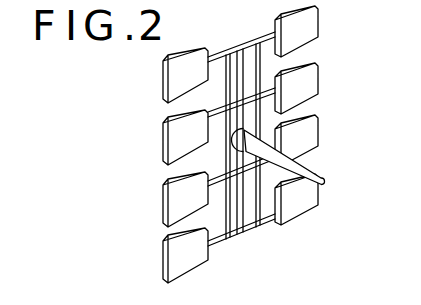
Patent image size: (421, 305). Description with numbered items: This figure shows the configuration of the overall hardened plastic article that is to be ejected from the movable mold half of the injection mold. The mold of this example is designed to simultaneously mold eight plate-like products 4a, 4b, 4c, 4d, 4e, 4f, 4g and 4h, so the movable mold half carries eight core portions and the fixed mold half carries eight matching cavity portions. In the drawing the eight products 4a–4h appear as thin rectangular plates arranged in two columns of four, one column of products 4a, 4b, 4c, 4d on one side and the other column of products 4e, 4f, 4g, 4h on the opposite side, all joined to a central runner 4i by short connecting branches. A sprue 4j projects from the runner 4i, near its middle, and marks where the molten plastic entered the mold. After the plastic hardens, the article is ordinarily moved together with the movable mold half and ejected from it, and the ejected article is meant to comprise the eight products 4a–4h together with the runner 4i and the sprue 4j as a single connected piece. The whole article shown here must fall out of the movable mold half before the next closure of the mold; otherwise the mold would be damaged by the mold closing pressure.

The product 4a is at (178, 78).
The product 4b is at (178, 142).
The product 4c is at (178, 202).
The product 4d is at (178, 256).
The product 4e is at (310, 32).
The product 4f is at (310, 88).
The product 4g is at (312, 142).
The product 4h is at (305, 204).
The runner 4i is at (245, 47).
The sprue 4j is at (306, 168).